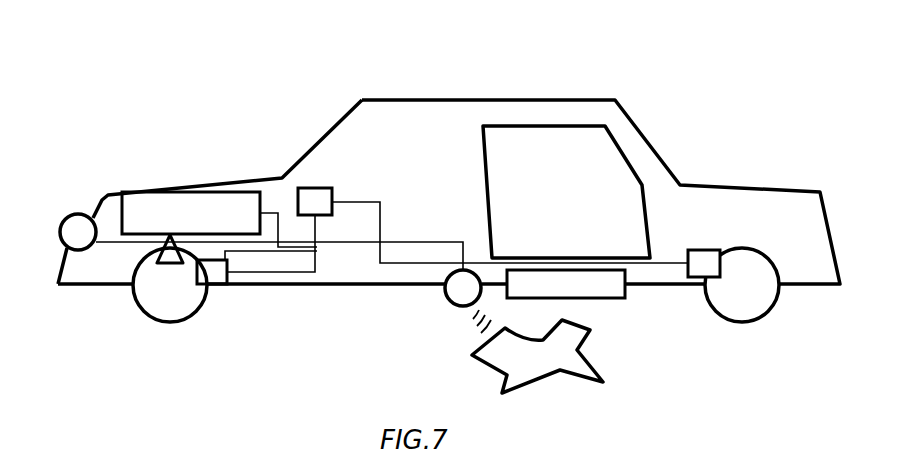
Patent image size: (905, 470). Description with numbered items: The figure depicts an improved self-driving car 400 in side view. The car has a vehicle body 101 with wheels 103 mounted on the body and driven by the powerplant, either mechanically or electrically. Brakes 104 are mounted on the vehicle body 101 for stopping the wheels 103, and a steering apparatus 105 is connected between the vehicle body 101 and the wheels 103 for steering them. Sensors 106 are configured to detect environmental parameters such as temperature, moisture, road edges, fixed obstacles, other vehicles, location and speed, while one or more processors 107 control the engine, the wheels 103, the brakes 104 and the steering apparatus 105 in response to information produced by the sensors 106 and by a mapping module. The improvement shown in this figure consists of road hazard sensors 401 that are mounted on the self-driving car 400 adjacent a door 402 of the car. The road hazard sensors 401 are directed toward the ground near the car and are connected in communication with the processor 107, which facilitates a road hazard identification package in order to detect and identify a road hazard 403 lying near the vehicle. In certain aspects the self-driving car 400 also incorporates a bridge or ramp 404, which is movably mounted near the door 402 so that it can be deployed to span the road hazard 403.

The improved self-driving car 400 is at (452, 72).
The vehicle body 101 is at (333, 127).
The wheels 103 is at (172, 322).
The brakes 104 is at (708, 250).
The steering apparatus 105 is at (168, 265).
The sensors 106 is at (84, 216).
The processor 107 is at (317, 188).
The road hazard sensors 401 is at (443, 292).
The door 402 is at (566, 192).
The road hazard 403 is at (537, 356).
The bridge or ramp 404 is at (610, 298).